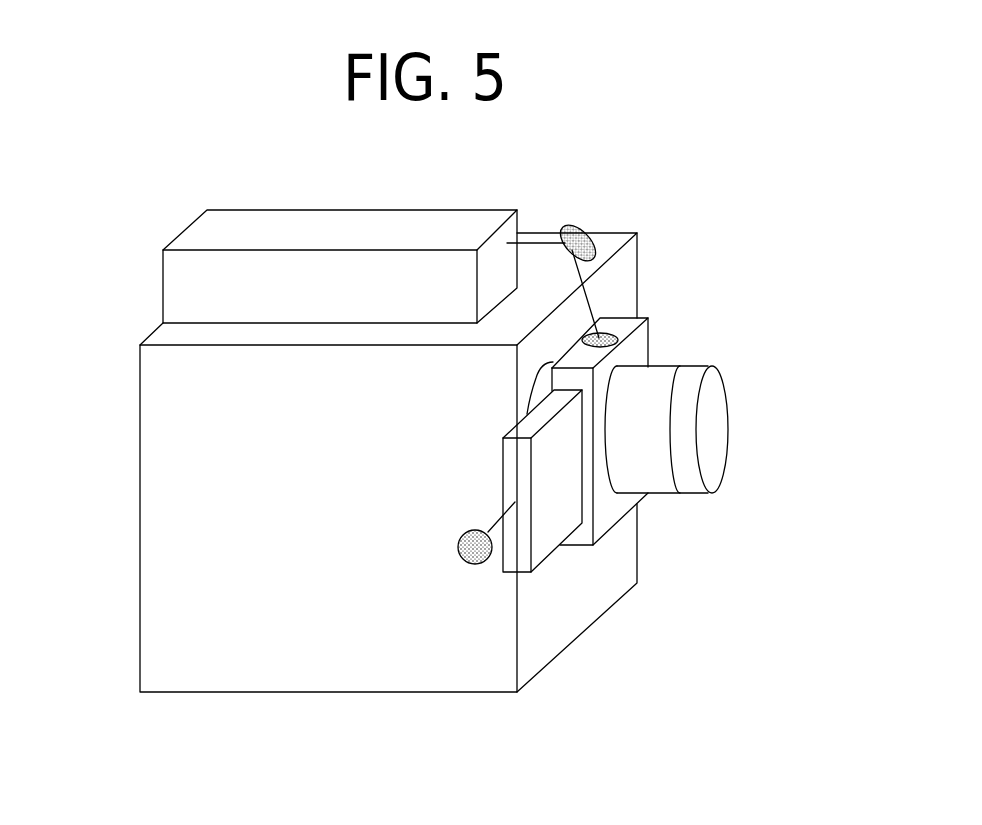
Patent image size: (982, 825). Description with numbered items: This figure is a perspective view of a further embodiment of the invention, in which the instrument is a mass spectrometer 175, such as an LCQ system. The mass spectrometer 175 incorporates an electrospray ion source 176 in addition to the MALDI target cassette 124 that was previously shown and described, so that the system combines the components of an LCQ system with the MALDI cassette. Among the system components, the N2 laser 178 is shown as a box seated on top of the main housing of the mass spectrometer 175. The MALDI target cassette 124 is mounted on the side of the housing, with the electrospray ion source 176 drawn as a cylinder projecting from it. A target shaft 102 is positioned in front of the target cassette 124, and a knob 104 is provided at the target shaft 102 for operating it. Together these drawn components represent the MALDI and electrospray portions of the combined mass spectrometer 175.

The mass spectrometer 175 is at (138, 553).
The N2 laser 178 is at (400, 207).
The MALDI target cassette 124 is at (615, 533).
The target shaft 102 is at (540, 565).
The knob 104 is at (478, 563).
The electrospray ion source 176 is at (725, 468).